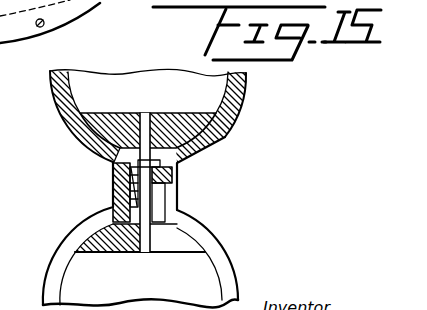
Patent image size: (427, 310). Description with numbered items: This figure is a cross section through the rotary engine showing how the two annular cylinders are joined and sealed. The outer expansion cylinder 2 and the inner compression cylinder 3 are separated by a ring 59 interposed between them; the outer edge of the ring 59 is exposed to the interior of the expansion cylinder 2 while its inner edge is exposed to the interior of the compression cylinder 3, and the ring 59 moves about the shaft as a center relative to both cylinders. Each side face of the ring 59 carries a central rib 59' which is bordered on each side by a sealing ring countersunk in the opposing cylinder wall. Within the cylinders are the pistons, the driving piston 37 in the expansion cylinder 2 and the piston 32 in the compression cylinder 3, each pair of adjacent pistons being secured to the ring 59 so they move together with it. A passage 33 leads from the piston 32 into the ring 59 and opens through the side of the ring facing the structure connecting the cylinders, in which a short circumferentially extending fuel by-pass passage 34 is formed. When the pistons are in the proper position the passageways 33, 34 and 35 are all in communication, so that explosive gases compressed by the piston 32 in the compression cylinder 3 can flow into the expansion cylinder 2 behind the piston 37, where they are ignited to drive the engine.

The expansion cylinder 2 is at (236, 89).
The compression cylinder 3 is at (235, 277).
The piston 32 is at (170, 244).
The passage 33 is at (190, 231).
The fuel by-pass passage 34 is at (222, 140).
The passageway 35 is at (113, 164).
The driving piston 37 is at (103, 113).
The ring 59 is at (87, 205).
The central rib 59' is at (213, 155).